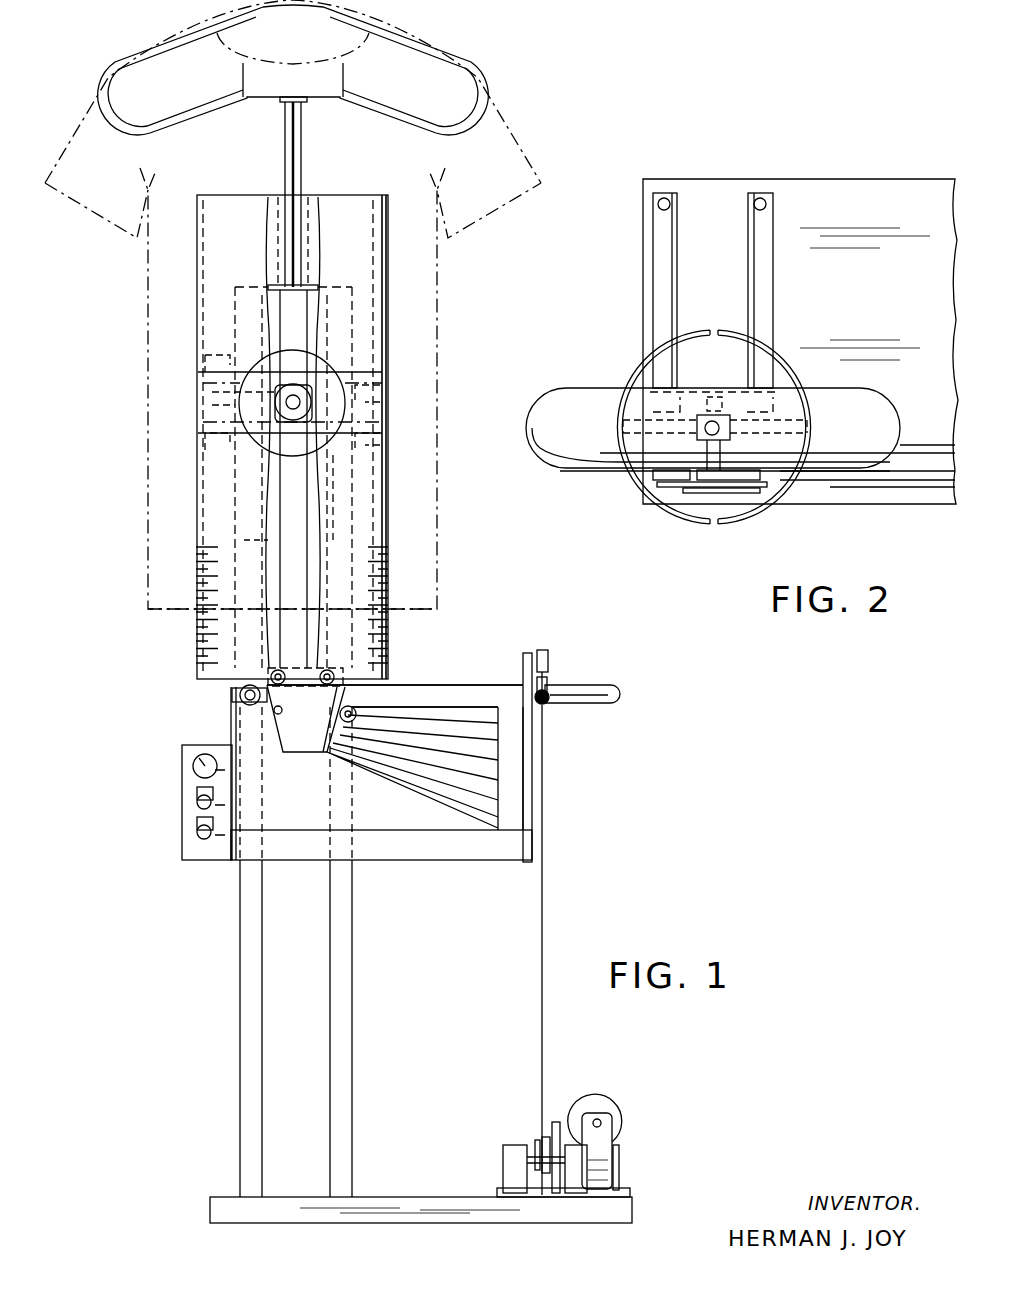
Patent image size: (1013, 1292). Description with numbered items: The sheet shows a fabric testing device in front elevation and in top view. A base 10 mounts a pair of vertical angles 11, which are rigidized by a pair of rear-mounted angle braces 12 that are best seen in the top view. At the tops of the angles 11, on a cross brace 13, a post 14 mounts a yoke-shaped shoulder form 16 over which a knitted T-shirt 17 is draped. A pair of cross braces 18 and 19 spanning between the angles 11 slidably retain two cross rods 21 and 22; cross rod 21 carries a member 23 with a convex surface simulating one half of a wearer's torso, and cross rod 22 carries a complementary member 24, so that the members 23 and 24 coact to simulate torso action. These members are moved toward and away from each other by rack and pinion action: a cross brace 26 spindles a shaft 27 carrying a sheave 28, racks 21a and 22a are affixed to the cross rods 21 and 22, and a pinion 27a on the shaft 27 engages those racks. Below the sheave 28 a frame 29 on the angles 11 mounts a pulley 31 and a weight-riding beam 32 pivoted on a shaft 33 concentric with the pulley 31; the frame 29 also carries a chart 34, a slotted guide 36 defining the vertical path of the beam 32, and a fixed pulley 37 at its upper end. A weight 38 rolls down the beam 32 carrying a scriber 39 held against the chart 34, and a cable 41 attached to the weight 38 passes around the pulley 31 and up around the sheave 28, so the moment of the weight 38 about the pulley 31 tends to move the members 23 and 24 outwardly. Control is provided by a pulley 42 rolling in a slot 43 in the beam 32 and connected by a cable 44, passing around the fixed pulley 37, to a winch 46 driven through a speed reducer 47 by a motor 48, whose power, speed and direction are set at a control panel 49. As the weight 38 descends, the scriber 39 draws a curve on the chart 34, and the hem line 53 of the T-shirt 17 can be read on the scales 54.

In FIG. 1, the base 10 is at (398, 1197).
In FIG. 2, the base 10 is at (898, 338).
In FIG. 1, the vertical angles 11 is at (332, 1033).
In FIG. 2, the angle braces 12 is at (748, 248).
In FIG. 1, the cross brace 13 is at (300, 285).
In FIG. 1, the post 14 is at (300, 150).
In FIG. 1, the shoulder form 16 is at (205, 92).
In FIG. 2, the shoulder form 16 is at (598, 470).
In FIG. 1, the T-shirt 17 is at (437, 312).
In FIG. 1, the cross brace 18 is at (333, 363).
In FIG. 1, the cross brace 19 is at (340, 455).
In FIG. 1, the cross rod 21 is at (212, 360).
In FIG. 2, the cross rod 21 is at (625, 425).
In FIG. 1, the rack 21a is at (375, 400).
In FIG. 1, the cross rod 22 is at (370, 442).
In FIG. 2, the cross rod 22 is at (800, 425).
In FIG. 1, the rack 22a is at (215, 428).
In FIG. 1, the member 23 is at (200, 563).
In FIG. 2, the member 23 is at (642, 500).
In FIG. 1, the member 24 is at (388, 565).
In FIG. 2, the member 24 is at (778, 500).
In FIG. 2, the cross brace 26 is at (733, 395).
In FIG. 1, the shaft 27 is at (294, 440).
In FIG. 2, the shaft 27 is at (708, 475).
In FIG. 1, the pinion 27a is at (212, 400).
In FIG. 1, the sheave 28 is at (288, 352).
In FIG. 2, the sheave 28 is at (740, 494).
In FIG. 1, the frame 29 is at (472, 852).
In FIG. 2, the frame 29 is at (914, 482).
In FIG. 1, the pulley 31 is at (246, 705).
In FIG. 1, the weight-riding beam 32 is at (495, 692).
In FIG. 2, the weight-riding beam 32 is at (850, 470).
In FIG. 1, the shaft 33 is at (242, 697).
In FIG. 1, the chart 34 is at (388, 822).
In FIG. 1, the slotted guide 36 is at (532, 788).
In FIG. 1, the fixed pulley 37 is at (549, 655).
In FIG. 1, the weight 38 is at (300, 752).
In FIG. 1, the scriber 39 is at (356, 708).
In FIG. 1, the cable 41 is at (270, 528).
In FIG. 1, the pulley 42 is at (548, 700).
In FIG. 1, the slot 43 is at (580, 686).
In FIG. 1, the cable 44 is at (543, 932).
In FIG. 1, the winch 46 is at (545, 1197).
In FIG. 1, the speed reducer 47 is at (612, 1165).
In FIG. 1, the motor 48 is at (598, 1102).
In FIG. 1, the control panel 49 is at (188, 810).
In FIG. 1, the hem line 53 is at (415, 612).
In FIG. 1, the scales 54 is at (375, 590).